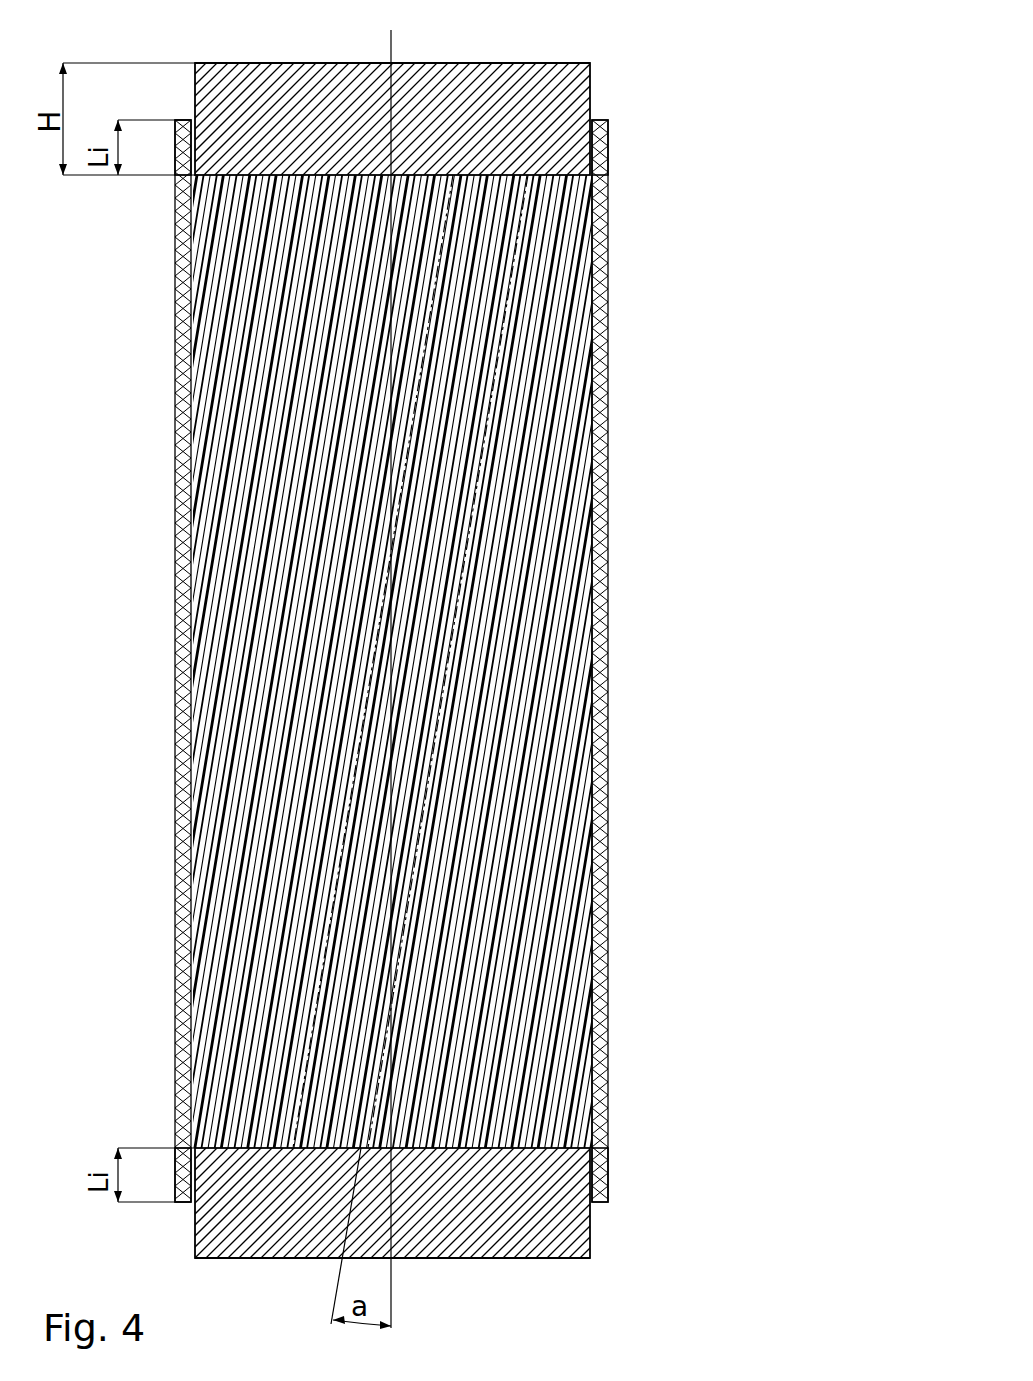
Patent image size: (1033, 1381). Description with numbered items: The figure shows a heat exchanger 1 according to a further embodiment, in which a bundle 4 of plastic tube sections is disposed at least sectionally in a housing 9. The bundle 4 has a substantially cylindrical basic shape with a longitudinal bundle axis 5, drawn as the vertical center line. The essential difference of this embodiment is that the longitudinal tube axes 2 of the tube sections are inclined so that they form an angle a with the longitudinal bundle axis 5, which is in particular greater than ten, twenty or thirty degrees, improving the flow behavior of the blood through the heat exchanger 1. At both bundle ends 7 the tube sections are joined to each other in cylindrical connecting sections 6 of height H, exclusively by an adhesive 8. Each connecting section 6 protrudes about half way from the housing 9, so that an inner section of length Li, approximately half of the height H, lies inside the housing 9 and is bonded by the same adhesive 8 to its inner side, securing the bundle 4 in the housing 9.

The heat exchanger 1 is at (684, 575).
The longitudinal tube axis 2 is at (355, 678).
The bundle 4 is at (612, 896).
The longitudinal bundle axis 5 is at (385, 35).
The connecting sections 6 is at (592, 76).
The bundle ends 7 is at (558, 48).
The adhesive 8 is at (572, 134).
The housing 9 is at (596, 1052).